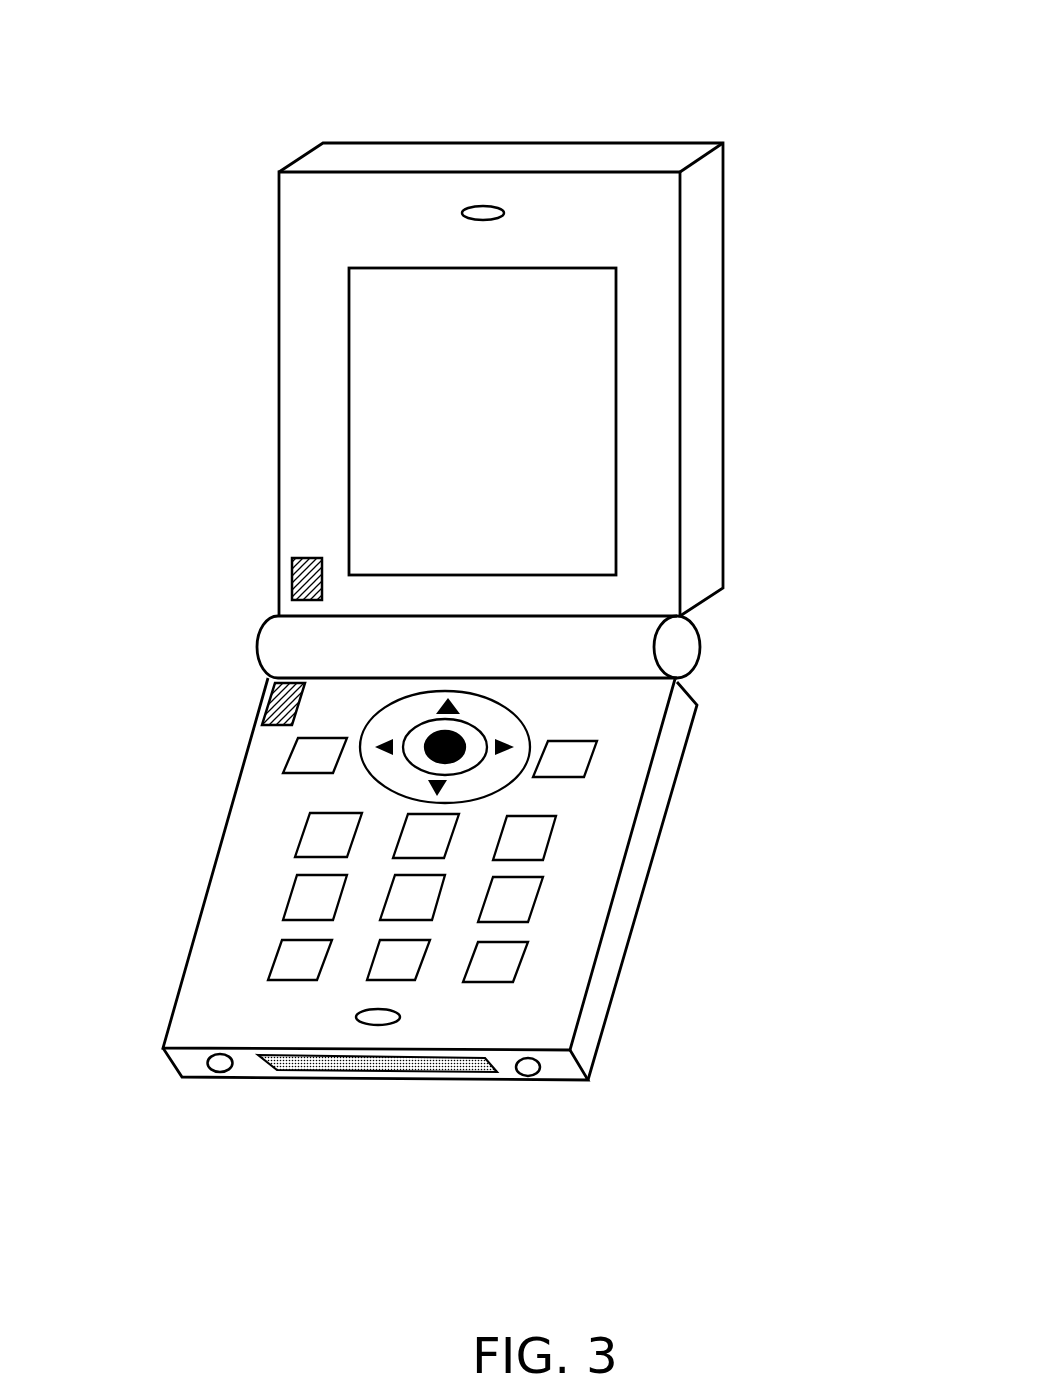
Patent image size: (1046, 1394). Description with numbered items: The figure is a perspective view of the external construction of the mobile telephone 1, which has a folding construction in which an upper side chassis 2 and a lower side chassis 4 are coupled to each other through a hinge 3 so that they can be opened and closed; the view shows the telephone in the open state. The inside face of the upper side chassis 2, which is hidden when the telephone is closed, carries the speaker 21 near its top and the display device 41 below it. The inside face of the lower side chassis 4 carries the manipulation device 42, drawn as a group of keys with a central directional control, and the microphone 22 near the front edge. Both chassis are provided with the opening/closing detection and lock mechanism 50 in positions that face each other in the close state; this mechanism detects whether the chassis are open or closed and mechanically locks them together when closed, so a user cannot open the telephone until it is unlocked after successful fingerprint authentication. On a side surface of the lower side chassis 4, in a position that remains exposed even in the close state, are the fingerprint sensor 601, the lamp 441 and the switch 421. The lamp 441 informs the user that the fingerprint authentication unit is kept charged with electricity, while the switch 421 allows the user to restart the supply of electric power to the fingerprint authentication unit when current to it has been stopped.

The mobile telephone 1 is at (450, 27).
The upper side chassis 2 is at (700, 237).
The speaker 21 is at (483, 205).
The display device 41 is at (560, 417).
The opening/closing detection and lock mechanism 50 is at (295, 575).
The hinge 3 is at (675, 648).
The lower side chassis 4 is at (610, 955).
The manipulation device 42 is at (512, 998).
The microphone 22 is at (360, 1015).
The lamp 441 is at (230, 1073).
The fingerprint sensor 601 is at (377, 1080).
The switch 421 is at (540, 1073).